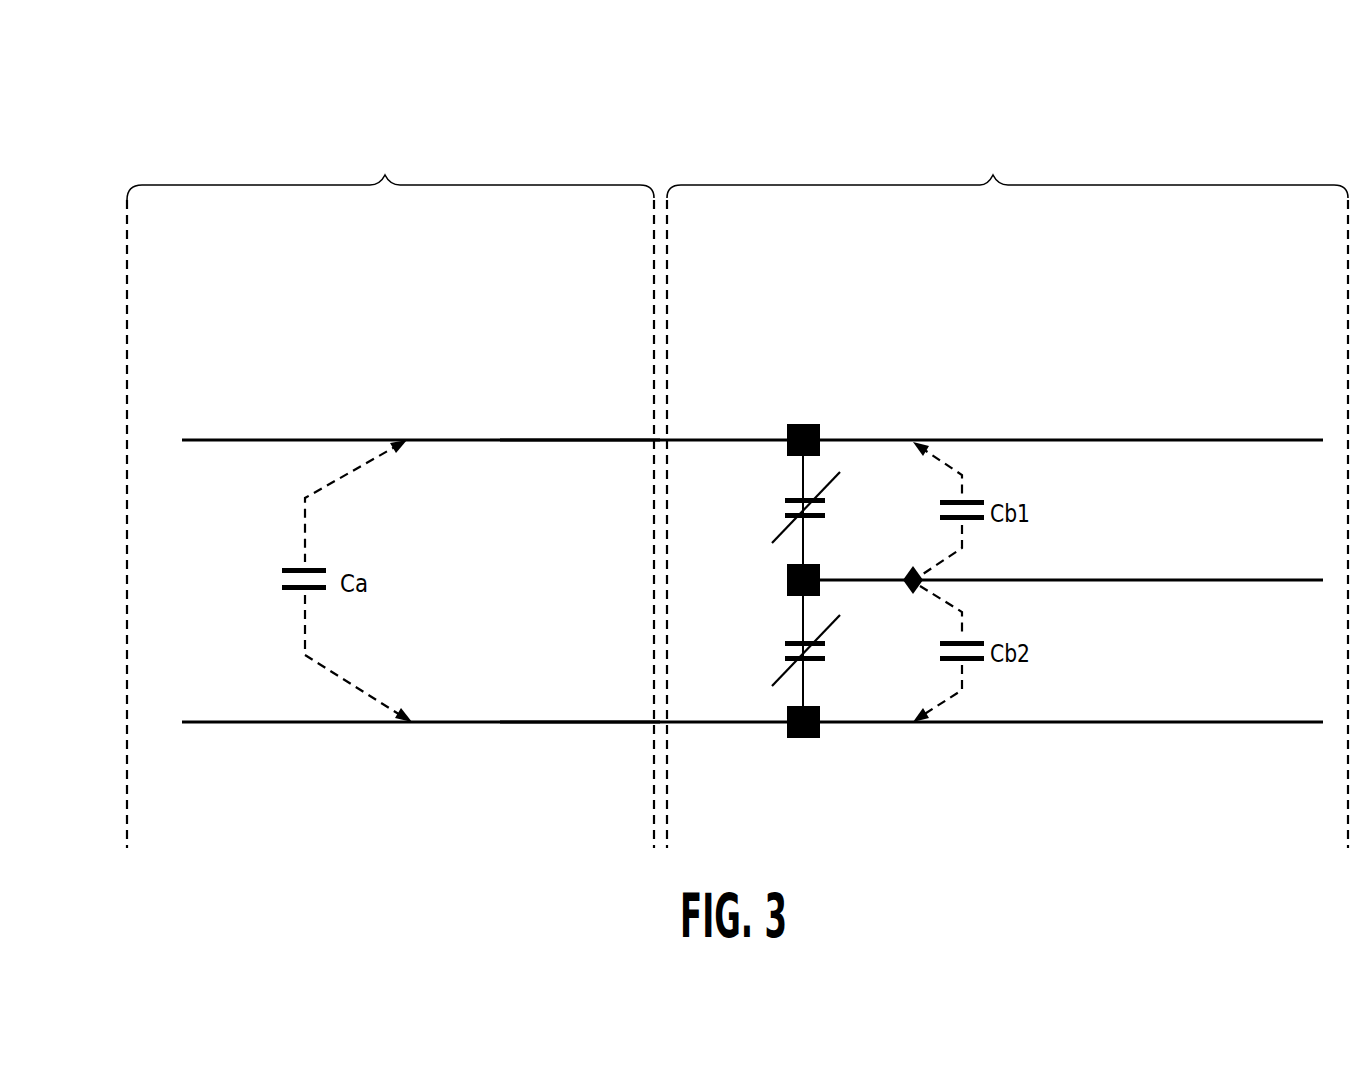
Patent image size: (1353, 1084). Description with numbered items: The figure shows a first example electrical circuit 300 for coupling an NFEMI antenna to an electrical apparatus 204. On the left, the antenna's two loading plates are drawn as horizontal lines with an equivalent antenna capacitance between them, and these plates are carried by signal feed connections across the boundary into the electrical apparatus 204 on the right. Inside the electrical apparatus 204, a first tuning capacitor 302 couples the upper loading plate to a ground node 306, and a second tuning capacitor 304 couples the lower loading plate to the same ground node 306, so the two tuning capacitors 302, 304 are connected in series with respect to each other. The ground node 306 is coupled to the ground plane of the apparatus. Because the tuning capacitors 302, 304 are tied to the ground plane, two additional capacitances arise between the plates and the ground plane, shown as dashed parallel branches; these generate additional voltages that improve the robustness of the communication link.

The electrical circuit 300 is at (102, 134).
The electrical apparatus 204 is at (1132, 155).
The first tuning capacitor 302 is at (822, 516).
The second tuning capacitor 304 is at (822, 658).
The ground node 306 is at (703, 608).